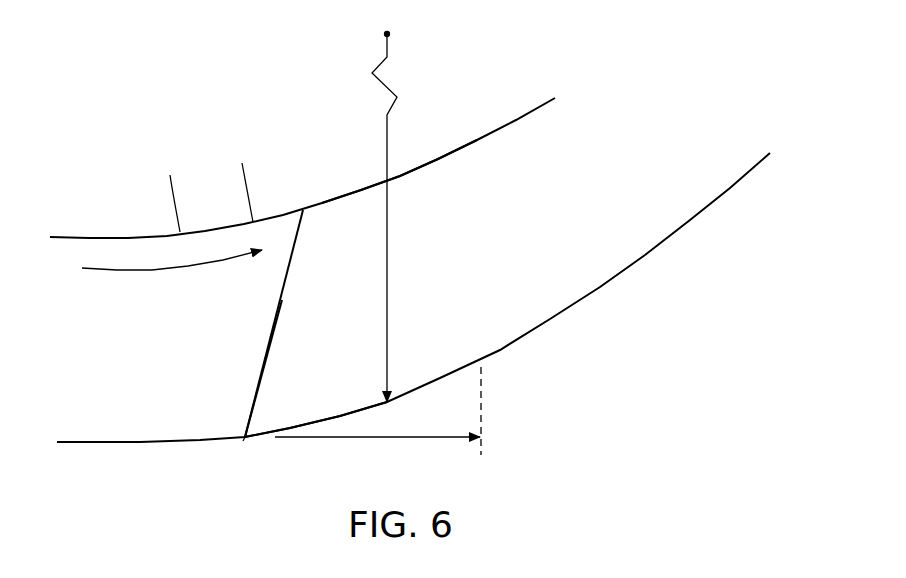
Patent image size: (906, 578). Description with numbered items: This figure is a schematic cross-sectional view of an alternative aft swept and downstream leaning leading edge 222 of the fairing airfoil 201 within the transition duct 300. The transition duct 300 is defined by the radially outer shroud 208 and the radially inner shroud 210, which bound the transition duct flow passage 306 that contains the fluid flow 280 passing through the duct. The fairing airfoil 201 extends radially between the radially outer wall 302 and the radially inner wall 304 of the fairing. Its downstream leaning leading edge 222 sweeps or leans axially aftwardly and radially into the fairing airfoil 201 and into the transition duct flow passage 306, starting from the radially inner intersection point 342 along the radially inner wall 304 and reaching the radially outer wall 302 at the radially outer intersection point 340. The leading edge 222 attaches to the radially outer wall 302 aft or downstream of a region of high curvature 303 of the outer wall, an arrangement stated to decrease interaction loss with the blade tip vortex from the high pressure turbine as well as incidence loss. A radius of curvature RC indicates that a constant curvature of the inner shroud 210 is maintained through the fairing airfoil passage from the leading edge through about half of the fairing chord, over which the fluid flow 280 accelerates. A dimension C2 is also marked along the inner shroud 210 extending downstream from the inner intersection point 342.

The radially outer shroud 208 is at (513, 121).
The radially inner shroud 210 is at (692, 222).
The radially outer wall 302 is at (438, 158).
The radially inner wall 304 is at (295, 429).
The fairing airfoil 201 is at (282, 300).
The downstream leaning leading edge 222 is at (263, 357).
The radially outer intersection point 340 is at (303, 210).
The radially inner intersection point 342 is at (245, 440).
The region of high curvature 303 is at (207, 177).
The fluid flow 280 is at (158, 271).
The transition duct 300 is at (632, 305).
The transition duct flow passage 306 is at (662, 171).
The radius of curvature RC is at (387, 298).
The axial chord C2 is at (417, 438).